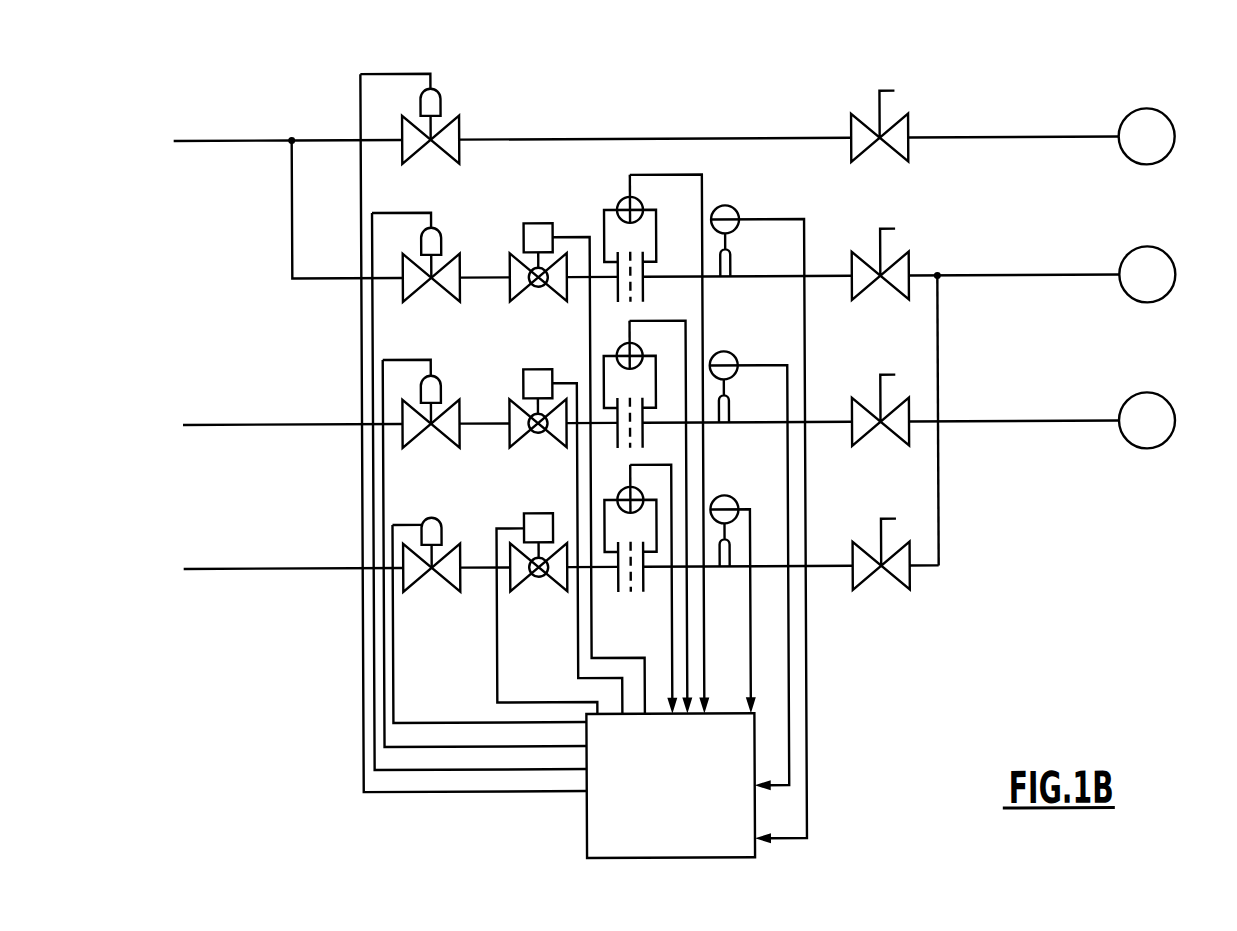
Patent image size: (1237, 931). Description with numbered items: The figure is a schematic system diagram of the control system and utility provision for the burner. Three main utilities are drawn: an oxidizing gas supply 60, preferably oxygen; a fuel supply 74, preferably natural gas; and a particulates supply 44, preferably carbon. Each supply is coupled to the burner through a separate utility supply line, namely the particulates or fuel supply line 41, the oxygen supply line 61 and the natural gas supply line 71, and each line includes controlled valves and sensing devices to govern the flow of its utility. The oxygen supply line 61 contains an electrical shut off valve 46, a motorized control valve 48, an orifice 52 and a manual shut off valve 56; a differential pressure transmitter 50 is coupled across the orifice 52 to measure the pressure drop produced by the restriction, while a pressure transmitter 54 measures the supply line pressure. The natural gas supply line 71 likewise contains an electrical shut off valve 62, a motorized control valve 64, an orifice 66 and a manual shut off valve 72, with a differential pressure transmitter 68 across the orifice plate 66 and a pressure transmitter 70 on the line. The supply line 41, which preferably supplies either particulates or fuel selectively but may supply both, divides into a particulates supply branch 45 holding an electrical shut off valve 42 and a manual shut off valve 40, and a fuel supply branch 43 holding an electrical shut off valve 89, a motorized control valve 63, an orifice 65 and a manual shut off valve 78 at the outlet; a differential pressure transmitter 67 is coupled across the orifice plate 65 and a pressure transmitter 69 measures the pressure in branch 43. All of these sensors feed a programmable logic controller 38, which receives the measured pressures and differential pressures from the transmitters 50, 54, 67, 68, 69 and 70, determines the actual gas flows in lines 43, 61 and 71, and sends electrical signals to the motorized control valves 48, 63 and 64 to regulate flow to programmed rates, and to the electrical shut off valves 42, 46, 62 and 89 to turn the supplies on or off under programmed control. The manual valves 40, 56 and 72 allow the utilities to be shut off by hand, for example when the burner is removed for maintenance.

The programmable logic controller (PLC) 38 is at (708, 860).
The manual shut off valve 40 is at (856, 128).
The particulates or fuel supply line 41 is at (222, 140).
The electrical shut off valve 42 is at (442, 103).
The fuel supply branch 43 is at (293, 246).
The particulates supply 44 is at (1168, 125).
The particulates supply branch 45 is at (340, 139).
The electrical shut off valve 46 is at (442, 382).
The motorized control valve 48 is at (532, 368).
The differential pressure transmitter 50 is at (619, 349).
The orifice 52 is at (645, 437).
The pressure transmitter 54 is at (725, 352).
The manual shut off valve 56 is at (876, 447).
The oxidizing gas supply 60 is at (1168, 407).
The oxygen supply line 61 is at (193, 423).
The electrical shut off valve 62 is at (442, 523).
The motorized control valve 63 is at (540, 223).
The motorized control valve 64 is at (533, 513).
The orifice 65 is at (645, 286).
The orifice 66 is at (618, 596).
The differential pressure transmitter 67 is at (643, 200).
The differential pressure transmitter 68 is at (619, 490).
The pressure transmitter 69 is at (735, 232).
The pressure transmitter 70 is at (732, 497).
The natural gas supply line 71 is at (208, 568).
The manual shut off valve 72 is at (876, 591).
The fuel supply 74 is at (1168, 262).
The natural gas supply manual valve 78 is at (876, 300).
The electrical shut off valve 89 is at (442, 241).